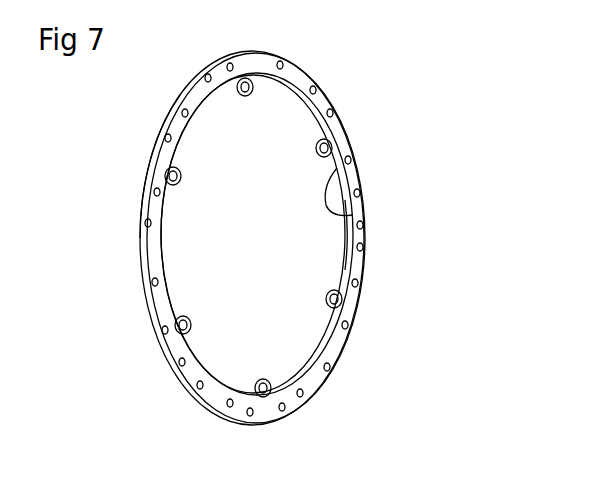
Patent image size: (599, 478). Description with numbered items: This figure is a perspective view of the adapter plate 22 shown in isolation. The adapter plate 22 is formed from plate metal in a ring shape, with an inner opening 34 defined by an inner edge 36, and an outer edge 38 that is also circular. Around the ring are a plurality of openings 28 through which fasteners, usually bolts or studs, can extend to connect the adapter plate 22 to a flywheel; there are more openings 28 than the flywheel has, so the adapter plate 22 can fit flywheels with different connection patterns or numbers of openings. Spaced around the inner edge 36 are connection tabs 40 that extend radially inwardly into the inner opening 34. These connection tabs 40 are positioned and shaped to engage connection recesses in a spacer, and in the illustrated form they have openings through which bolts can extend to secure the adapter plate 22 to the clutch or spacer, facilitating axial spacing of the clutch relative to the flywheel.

The adapter plate 22 is at (337, 125).
The openings 28 is at (305, 395).
The inner opening 34 is at (318, 246).
The inner edge 36 is at (352, 215).
The outer edge 38 is at (142, 245).
The connection tabs 40 is at (318, 146).